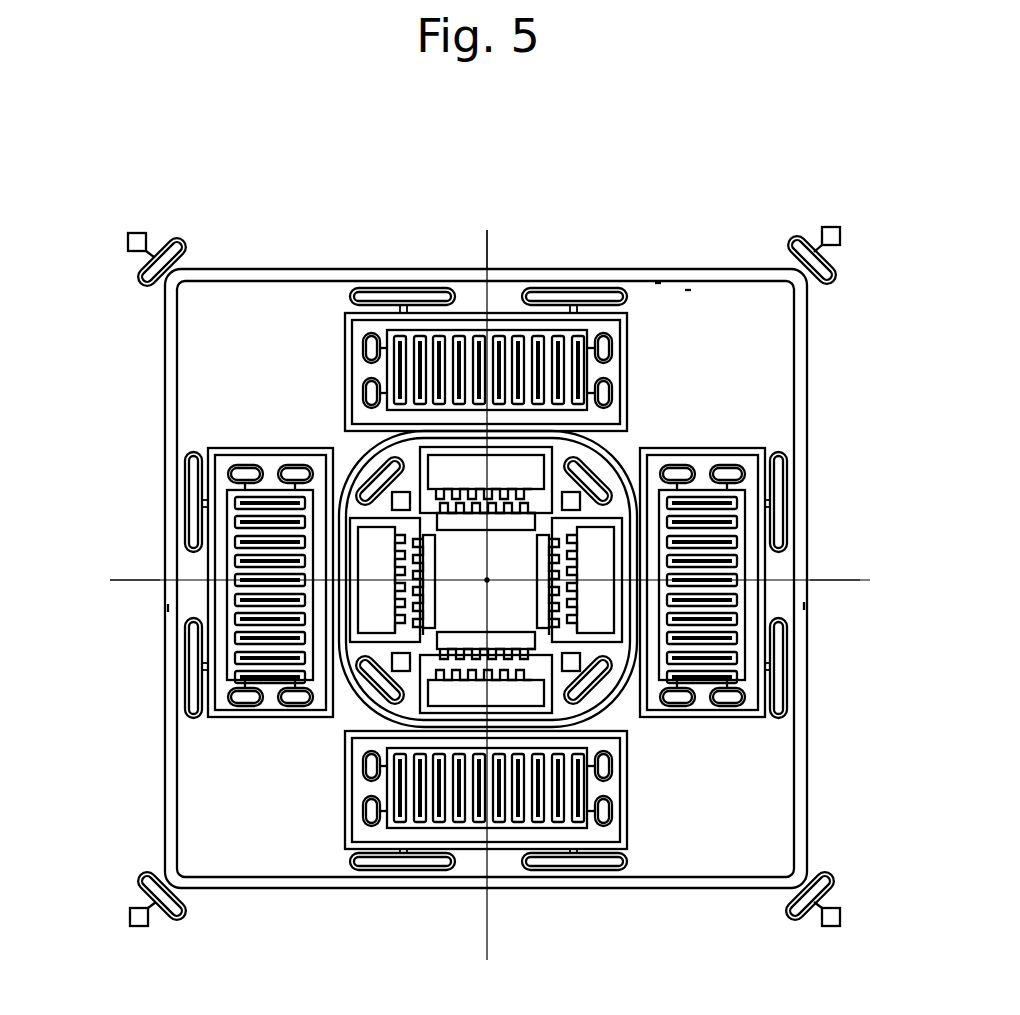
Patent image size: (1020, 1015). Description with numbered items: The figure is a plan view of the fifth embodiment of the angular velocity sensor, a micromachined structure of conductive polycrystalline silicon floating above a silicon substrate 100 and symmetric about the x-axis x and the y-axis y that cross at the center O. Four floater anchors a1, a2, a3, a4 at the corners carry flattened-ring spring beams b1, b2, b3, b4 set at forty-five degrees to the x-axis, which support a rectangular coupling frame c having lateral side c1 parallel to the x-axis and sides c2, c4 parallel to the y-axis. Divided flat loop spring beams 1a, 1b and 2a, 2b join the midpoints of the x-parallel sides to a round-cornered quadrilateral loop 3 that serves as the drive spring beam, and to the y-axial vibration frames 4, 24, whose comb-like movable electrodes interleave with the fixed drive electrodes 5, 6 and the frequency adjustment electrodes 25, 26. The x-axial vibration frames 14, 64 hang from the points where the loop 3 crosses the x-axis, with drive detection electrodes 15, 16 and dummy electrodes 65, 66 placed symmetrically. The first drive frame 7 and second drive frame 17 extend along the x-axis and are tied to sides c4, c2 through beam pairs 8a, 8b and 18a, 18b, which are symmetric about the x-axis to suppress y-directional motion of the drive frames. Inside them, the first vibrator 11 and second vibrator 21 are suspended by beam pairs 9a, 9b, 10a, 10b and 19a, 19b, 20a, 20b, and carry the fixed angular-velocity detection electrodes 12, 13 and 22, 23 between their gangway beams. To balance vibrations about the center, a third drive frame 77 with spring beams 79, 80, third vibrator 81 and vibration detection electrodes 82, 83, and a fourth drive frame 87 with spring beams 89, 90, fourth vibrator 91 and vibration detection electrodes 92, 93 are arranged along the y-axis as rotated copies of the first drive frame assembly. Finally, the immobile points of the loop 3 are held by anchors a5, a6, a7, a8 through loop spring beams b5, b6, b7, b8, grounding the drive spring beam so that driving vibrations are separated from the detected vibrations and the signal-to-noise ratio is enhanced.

The silicon substrate 100 is at (738, 852).
The quadrilateral loop 3 is at (400, 435).
The y-axial vibration frame 4 is at (525, 520).
The drive electrode 5 is at (478, 512).
The drive electrode 6 is at (465, 498).
The first drive frame 7 is at (745, 452).
The first vibrator 11 is at (708, 492).
The angular-velocity detection electrode 12 is at (760, 560).
The angular-velocity detection electrode 13 is at (722, 545).
The x-axial vibration frame 14 is at (385, 605).
The drive detection electrode 15 is at (385, 630).
The drive detection electrode 16 is at (380, 540).
The second drive frame 17 is at (255, 487).
The second vibrator 21 is at (270, 500).
The angular-velocity detection electrode 22 is at (262, 547).
The angular-velocity detection electrode 23 is at (262, 523).
The y-axial vibration frame 24 is at (738, 655).
The frequency adjustment electrode 25 is at (528, 690).
The frequency adjustment electrode 26 is at (745, 628).
The x-axial vibration frame 64 is at (505, 475).
The dummy electrode 65 is at (535, 570).
The dummy electrode 66 is at (780, 592).
The third drive frame 77 is at (625, 800).
The flat loop spring beam 79 is at (600, 845).
The flat loop spring beam 80 is at (358, 832).
The third vibrator 81 is at (375, 792).
The vibration detection electrode 82 is at (520, 805).
The vibration detection electrode 83 is at (540, 815).
The fourth drive frame 87 is at (628, 350).
The flat loop spring beam 89 is at (628, 325).
The flat loop spring beam 90 is at (350, 312).
The fourth vibrator 91 is at (628, 385).
The vibration detection electrode 92 is at (518, 470).
The vibration detection electrode 93 is at (533, 485).
The flat loop spring beam 1a is at (650, 266).
The flat loop spring beam 1b is at (380, 288).
The flat loop spring beam 2a is at (583, 866).
The flat loop spring beam 2b is at (387, 866).
The flat loop spring beam 8a is at (787, 470).
The flat loop spring beam 8b is at (788, 695).
The flat loop spring beam 9a is at (732, 466).
The flat loop spring beam 9b is at (690, 463).
The flat loop spring beam 10a is at (740, 700).
The flat loop spring beam 10b is at (695, 708).
The flat loop spring beam 18a is at (190, 480).
The flat loop spring beam 18b is at (190, 695).
The flat loop spring beam 19a is at (300, 465).
The flat loop spring beam 19b is at (242, 465).
The flat loop spring beam 20a is at (297, 706).
The flat loop spring beam 20b is at (245, 706).
The floater anchor a1 is at (835, 226).
The floater anchor a2 is at (138, 231).
The floater anchor a3 is at (830, 928).
The floater anchor a4 is at (143, 928).
The anchor a5 is at (582, 497).
The anchor a6 is at (402, 495).
The anchor a7 is at (582, 668).
The anchor a8 is at (396, 665).
The spring beam b1 is at (793, 240).
The spring beam b2 is at (180, 247).
The spring beam b3 is at (828, 882).
The spring beam b4 is at (140, 887).
The loop spring beam b5 is at (605, 474).
The loop spring beam b6 is at (383, 470).
The loop spring beam b7 is at (605, 688).
The loop spring beam b8 is at (378, 692).
The coupling frame c is at (658, 282).
The lateral side c1 is at (688, 290).
The side c2 is at (170, 608).
The side c4 is at (800, 606).
The center O is at (485, 580).
The x-axis x is at (124, 581).
The y-axis y is at (680, 591).